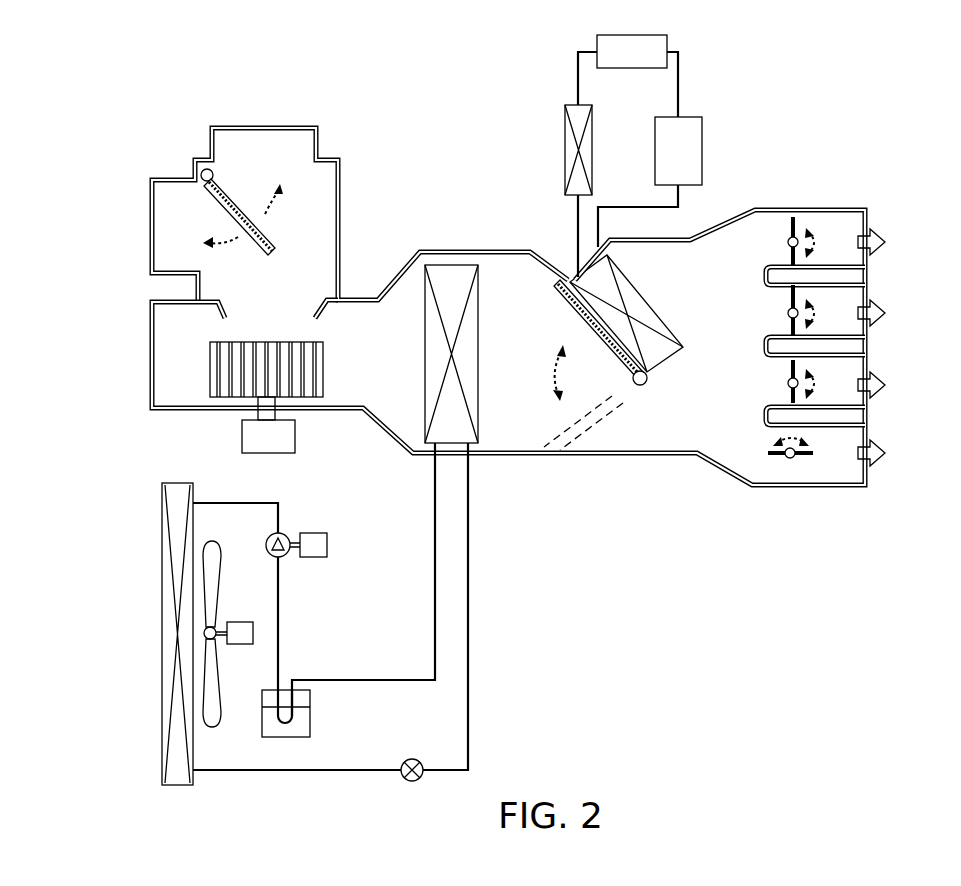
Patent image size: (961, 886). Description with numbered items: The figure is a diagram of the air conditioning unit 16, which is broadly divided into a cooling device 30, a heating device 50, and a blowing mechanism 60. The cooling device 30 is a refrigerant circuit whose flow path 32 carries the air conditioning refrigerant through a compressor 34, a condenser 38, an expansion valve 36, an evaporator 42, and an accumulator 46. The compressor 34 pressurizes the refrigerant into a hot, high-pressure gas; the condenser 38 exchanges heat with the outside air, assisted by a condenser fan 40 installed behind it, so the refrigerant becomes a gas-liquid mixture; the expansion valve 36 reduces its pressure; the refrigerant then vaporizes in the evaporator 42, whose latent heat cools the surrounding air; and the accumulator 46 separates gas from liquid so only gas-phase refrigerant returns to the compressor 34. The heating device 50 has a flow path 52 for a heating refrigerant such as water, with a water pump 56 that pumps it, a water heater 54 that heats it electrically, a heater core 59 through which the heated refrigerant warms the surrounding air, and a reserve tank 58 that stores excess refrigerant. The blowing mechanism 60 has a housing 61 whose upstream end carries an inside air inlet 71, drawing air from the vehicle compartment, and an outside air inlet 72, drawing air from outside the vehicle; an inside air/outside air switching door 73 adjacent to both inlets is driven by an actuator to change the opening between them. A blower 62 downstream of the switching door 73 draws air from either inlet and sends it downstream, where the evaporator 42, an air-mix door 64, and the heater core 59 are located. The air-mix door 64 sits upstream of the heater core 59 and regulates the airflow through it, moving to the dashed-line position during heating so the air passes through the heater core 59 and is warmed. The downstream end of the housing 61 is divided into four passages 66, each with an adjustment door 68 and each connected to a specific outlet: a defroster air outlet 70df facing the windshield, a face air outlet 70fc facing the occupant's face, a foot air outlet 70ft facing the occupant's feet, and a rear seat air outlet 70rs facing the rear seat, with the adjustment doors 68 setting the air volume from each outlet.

The air conditioning unit 16 is at (418, 114).
The cooling device 30 is at (503, 683).
The flow path 32 is at (435, 600).
The compressor 34 is at (284, 535).
The expansion valve 36 is at (412, 759).
The condenser 38 is at (178, 483).
The condenser fan 40 is at (218, 552).
The evaporator 42 is at (451, 265).
The accumulator 46 is at (313, 719).
The heating device 50 is at (718, 74).
The flow path 52 is at (684, 98).
The water heater 54 is at (565, 156).
The water pump 56 is at (633, 35).
The reserve tank 58 is at (702, 150).
The heater core 59 is at (636, 281).
The blowing mechanism 60 is at (826, 181).
The housing 61 is at (394, 274).
The blower 62 is at (210, 365).
The air-mix door 64 is at (560, 300).
The passages 66 is at (845, 227).
The adjustment door 68 is at (793, 219).
The defroster air outlet 70df is at (936, 254).
The face air outlet 70fc is at (936, 325).
The foot air outlet 70ft is at (936, 397).
The rear seat air outlet 70rs is at (936, 465).
The inside air inlet 71 is at (270, 128).
The outside air inlet 72 is at (153, 230).
The inside air/outside air switching door 73 is at (278, 247).